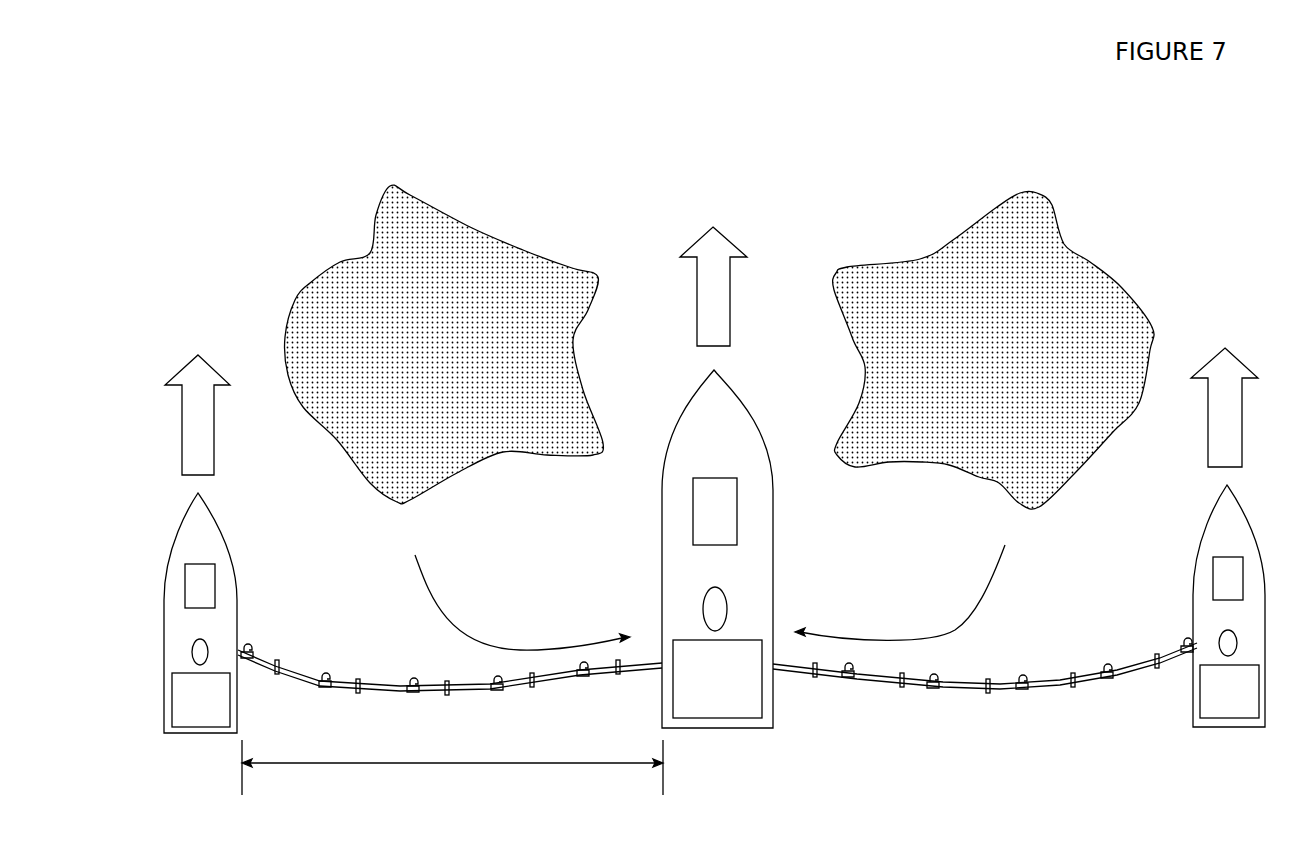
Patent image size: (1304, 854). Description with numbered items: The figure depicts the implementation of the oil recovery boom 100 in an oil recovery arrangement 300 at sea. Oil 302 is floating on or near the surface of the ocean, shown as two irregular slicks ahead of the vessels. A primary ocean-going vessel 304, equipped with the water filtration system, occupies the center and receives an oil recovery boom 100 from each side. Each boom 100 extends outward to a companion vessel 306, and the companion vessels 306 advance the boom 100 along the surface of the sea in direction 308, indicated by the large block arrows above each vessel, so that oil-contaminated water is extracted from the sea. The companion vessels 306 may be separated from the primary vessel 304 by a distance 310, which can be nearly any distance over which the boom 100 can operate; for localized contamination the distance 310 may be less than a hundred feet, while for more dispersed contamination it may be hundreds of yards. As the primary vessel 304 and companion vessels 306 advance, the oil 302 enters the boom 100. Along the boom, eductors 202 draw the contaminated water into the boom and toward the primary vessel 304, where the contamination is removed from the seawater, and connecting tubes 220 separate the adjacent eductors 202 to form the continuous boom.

The oil spill containment system 300 is at (714, 436).
The oil 302 is at (727, 334).
The direction 308 is at (725, 248).
The companion vessels 306 is at (714, 609).
The primary ocean-going vessel 304 is at (778, 549).
The oil recovery boom 100 is at (395, 668).
The eductor 202 is at (985, 715).
The connecting tube 220 is at (1126, 705).
The distance 310 is at (415, 763).